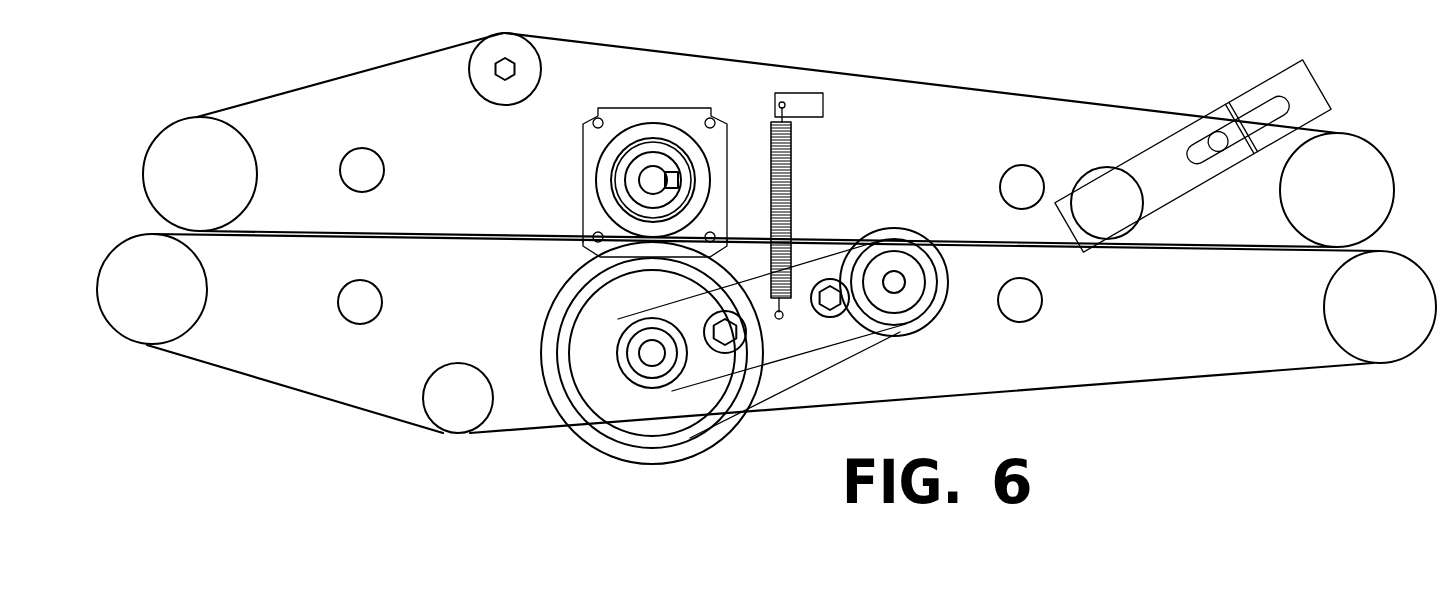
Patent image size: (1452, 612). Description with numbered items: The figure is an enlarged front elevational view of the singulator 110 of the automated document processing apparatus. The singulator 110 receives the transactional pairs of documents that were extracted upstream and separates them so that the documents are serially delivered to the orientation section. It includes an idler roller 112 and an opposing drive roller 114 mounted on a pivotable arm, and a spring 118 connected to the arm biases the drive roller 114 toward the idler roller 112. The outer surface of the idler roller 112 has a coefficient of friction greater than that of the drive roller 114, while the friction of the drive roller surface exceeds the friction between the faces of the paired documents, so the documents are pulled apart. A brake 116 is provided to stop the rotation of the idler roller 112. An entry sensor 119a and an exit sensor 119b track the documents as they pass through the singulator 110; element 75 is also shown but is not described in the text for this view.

The singulator 110 is at (844, 66).
The idler roller 112 is at (672, 135).
The drive roller 114 is at (723, 418).
The brake 116 is at (655, 138).
The spring 118 is at (792, 182).
The entry sensor 119a is at (1020, 162).
The exit sensor 119b is at (340, 163).
The adjustable roller bracket 75 is at (1337, 248).